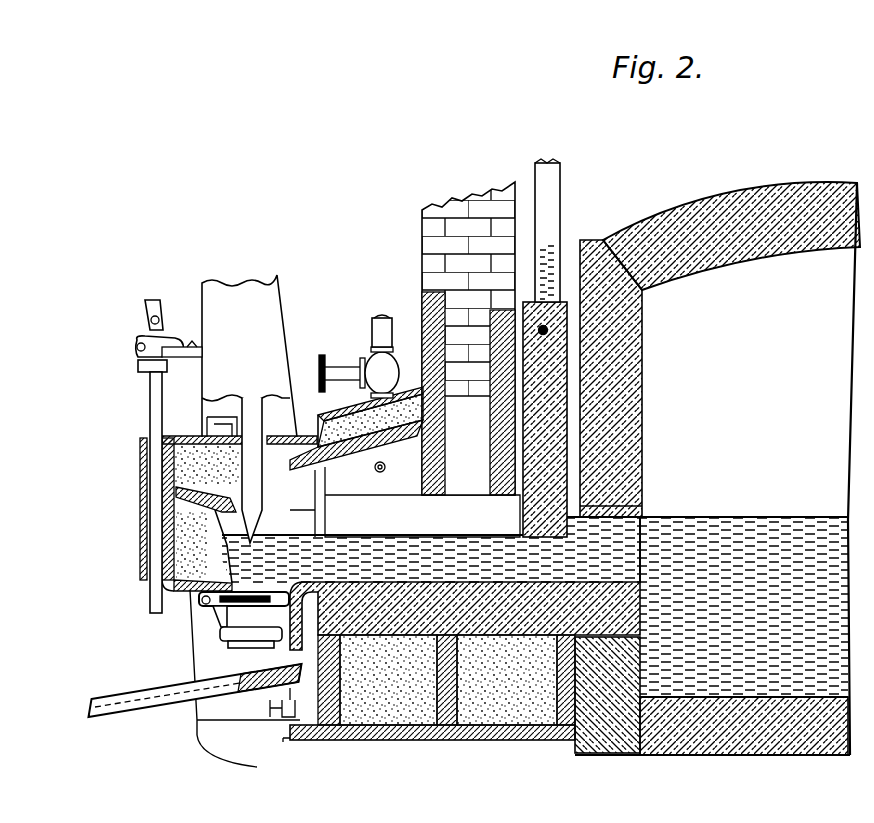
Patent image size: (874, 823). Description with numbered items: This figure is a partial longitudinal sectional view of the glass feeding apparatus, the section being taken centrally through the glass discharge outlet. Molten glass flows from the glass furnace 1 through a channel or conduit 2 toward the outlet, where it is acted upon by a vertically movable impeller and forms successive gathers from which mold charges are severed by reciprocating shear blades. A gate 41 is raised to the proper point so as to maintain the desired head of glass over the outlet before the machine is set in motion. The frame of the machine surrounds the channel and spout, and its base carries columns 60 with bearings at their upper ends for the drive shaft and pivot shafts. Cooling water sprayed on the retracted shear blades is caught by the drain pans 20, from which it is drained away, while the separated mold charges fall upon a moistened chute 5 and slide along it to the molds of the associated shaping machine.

The glass furnace 1 is at (692, 210).
The channel or conduit 2 is at (405, 499).
The gate 41 is at (562, 413).
The columns 60 is at (268, 314).
The drain pans 20 is at (260, 634).
The moistened chute 5 is at (121, 698).